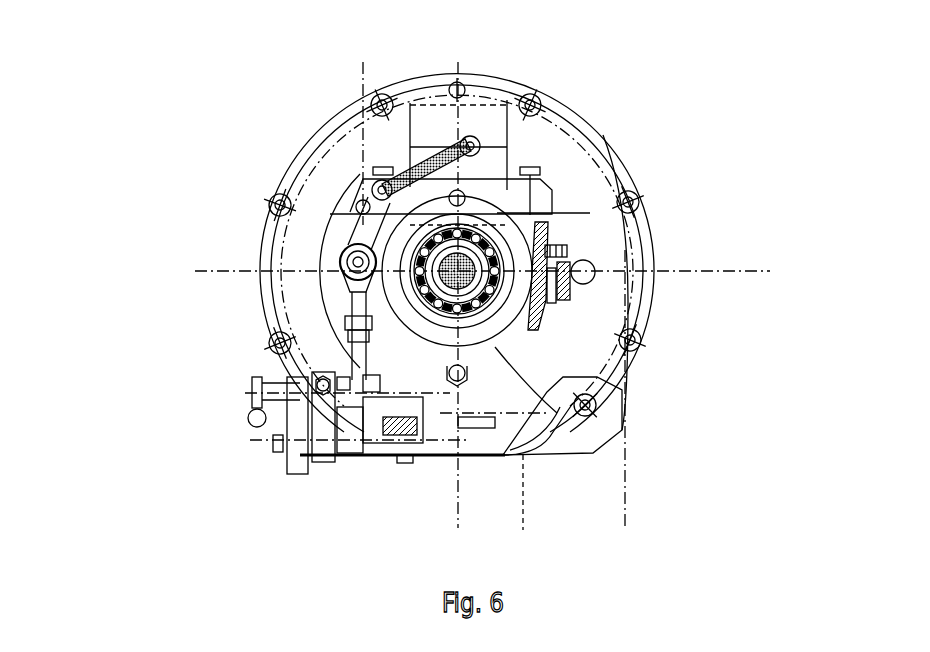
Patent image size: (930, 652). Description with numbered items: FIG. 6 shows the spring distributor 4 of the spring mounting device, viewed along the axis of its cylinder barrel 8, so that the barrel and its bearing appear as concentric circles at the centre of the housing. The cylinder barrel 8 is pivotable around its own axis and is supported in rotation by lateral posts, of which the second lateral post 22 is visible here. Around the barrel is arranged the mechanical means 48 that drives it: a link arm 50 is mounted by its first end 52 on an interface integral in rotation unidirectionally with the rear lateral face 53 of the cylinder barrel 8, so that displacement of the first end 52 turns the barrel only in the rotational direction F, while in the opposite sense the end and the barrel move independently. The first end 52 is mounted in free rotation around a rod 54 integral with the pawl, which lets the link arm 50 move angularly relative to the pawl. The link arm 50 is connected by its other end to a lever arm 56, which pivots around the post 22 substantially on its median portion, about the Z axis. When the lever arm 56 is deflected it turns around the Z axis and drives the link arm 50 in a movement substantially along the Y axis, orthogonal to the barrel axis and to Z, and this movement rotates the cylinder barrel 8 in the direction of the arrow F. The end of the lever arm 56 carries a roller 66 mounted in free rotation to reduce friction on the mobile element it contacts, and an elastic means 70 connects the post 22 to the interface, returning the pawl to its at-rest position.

The spring distributor 4 is at (682, 132).
The cylinder barrel 8 is at (497, 318).
The second lateral post 22 is at (572, 136).
The mechanical means 48 is at (172, 287).
The link arm 50 is at (334, 307).
The first end of the link arm 52 is at (338, 262).
The rear lateral face of the cylinder barrel 53 is at (495, 350).
The rod 54 is at (350, 243).
The lever arm 56 is at (423, 420).
The roller 66 is at (296, 468).
The elastic means 70 is at (488, 102).
The rotational direction F is at (208, 103).
The Y axis Y is at (363, 72).
The Z axis Z is at (247, 393).